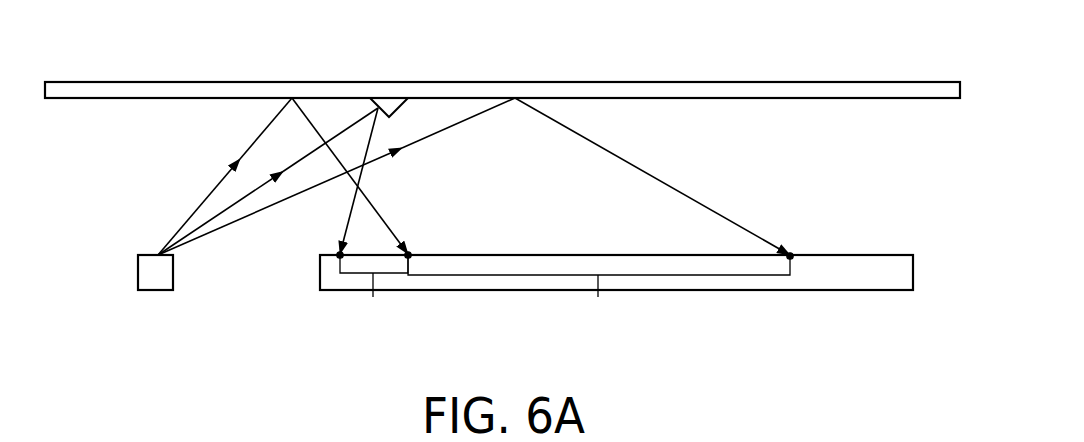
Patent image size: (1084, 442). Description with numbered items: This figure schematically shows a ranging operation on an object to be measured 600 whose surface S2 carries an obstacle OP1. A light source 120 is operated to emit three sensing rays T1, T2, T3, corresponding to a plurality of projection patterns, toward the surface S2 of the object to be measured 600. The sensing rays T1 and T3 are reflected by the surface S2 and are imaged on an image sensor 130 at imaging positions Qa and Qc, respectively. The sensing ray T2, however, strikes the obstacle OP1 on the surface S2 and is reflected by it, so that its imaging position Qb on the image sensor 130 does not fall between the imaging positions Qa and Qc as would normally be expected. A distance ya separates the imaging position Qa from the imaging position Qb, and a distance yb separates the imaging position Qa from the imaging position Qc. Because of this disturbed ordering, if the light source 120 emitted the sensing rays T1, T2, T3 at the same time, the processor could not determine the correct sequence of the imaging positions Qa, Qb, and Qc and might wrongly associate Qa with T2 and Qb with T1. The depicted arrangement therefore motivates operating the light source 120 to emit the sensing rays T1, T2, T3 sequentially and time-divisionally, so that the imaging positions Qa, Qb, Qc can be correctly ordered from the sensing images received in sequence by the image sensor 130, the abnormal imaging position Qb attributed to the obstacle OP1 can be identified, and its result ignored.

The object to be measured 600 is at (900, 88).
The surface of the object to be measured S2 is at (106, 100).
The obstacle OP1 is at (390, 104).
The light source 120 is at (138, 272).
The image sensor 130 is at (882, 268).
The sensing ray T1 is at (283, 176).
The sensing ray T2 is at (268, 181).
The sensing ray T3 is at (474, 176).
The imaging position Qa is at (410, 253).
The imaging position Qb is at (338, 253).
The imaging position Qc is at (791, 254).
The distance ya is at (374, 292).
The distance yb is at (599, 298).